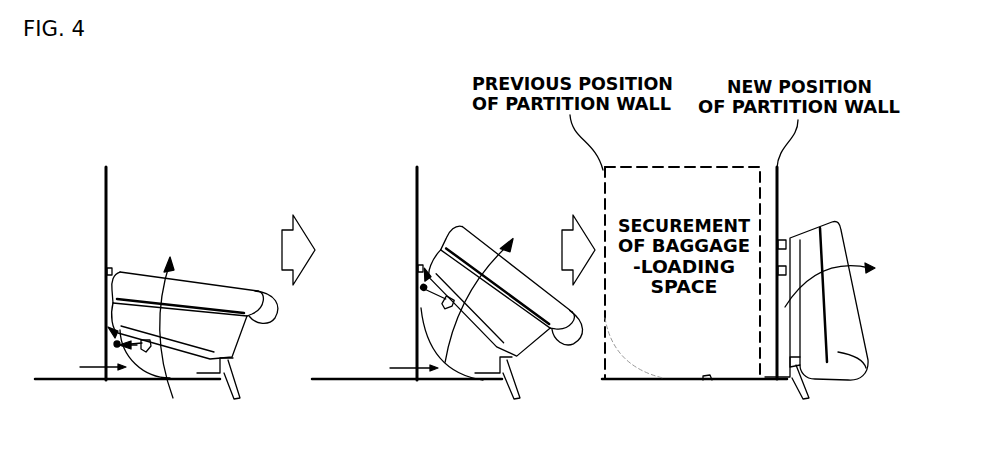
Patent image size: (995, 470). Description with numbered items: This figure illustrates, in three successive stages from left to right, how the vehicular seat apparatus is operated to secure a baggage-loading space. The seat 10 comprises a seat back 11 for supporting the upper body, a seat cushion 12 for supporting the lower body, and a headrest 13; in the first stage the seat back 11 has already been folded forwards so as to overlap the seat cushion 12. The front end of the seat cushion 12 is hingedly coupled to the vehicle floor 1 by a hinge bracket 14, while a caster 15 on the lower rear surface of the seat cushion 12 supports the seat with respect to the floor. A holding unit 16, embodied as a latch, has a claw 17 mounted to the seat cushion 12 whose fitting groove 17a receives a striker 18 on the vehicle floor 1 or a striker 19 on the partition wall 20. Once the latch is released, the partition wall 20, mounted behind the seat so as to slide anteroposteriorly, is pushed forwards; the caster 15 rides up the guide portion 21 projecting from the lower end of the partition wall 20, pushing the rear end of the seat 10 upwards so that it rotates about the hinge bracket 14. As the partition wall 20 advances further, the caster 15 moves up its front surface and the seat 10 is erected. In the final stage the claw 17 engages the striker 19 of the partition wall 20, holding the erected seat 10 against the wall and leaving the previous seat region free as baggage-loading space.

The vehicle floor 1 is at (55, 380).
The seat 10 is at (187, 313).
The seat back 11 is at (246, 295).
The seat cushion 12 is at (238, 343).
The headrest 13 is at (269, 320).
The hinge bracket 14 is at (229, 370).
The caster 15 is at (108, 329).
The holding unit 16 is at (117, 346).
The claw 17 is at (151, 343).
The fitting groove 17a is at (147, 352).
The striker 18 is at (705, 381).
The striker 19 is at (111, 269).
The partition wall 20 is at (106, 204).
The guide portion 21 is at (133, 351).